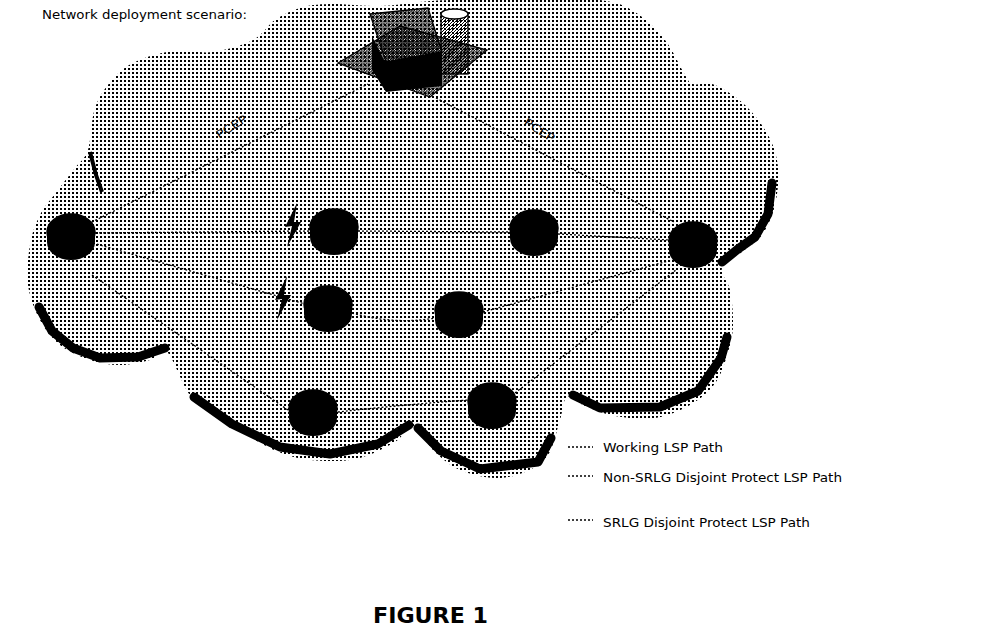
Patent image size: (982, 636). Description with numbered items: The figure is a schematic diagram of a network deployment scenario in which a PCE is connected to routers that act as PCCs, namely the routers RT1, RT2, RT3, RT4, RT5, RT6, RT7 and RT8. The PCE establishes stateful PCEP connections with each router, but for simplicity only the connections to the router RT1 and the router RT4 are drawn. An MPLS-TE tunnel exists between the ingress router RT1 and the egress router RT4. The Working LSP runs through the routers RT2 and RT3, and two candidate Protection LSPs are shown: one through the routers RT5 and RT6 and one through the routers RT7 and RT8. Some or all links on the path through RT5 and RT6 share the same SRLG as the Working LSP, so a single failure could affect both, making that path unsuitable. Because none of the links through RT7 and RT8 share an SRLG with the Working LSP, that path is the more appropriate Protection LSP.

The router RT1 is at (72, 243).
The router RT2 is at (334, 224).
The router RT3 is at (534, 226).
The router RT4 is at (693, 246).
The router RT5 is at (328, 320).
The router RT6 is at (459, 324).
The router RT7 is at (313, 421).
The router RT8 is at (492, 418).